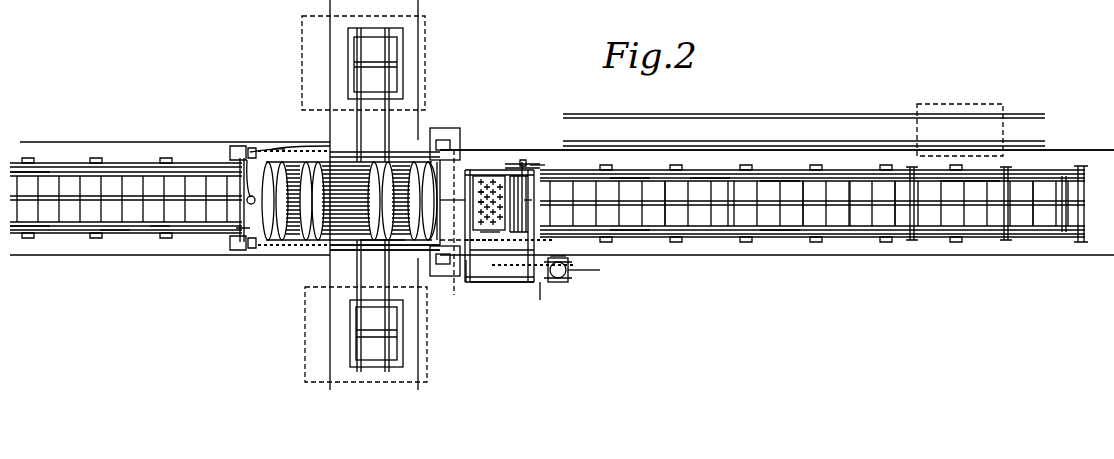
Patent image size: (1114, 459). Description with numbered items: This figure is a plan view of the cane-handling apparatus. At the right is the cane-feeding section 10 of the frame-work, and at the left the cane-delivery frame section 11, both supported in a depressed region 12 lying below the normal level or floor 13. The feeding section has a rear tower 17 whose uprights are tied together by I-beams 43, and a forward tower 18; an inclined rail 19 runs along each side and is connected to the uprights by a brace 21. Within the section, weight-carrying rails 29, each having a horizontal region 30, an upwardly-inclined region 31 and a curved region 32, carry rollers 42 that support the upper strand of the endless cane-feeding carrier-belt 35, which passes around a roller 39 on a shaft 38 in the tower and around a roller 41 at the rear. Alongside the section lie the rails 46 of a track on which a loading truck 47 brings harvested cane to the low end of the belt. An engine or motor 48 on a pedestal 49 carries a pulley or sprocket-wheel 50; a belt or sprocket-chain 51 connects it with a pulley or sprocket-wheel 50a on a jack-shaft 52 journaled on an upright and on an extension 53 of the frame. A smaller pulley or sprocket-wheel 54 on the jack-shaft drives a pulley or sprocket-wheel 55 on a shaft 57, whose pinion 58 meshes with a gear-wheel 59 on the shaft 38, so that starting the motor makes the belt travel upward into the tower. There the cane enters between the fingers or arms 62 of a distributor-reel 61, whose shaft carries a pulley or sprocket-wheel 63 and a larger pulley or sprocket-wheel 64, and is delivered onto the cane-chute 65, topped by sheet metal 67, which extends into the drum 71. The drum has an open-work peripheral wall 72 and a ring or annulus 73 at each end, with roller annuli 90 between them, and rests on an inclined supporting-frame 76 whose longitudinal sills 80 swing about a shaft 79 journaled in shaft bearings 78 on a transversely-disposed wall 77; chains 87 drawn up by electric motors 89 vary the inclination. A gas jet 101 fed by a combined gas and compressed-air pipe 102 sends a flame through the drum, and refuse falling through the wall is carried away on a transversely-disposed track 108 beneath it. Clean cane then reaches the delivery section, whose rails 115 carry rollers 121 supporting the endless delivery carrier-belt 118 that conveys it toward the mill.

The cane-feeding section 10 is at (727, 247).
The cane-delivery frame section 11 is at (144, 161).
The depressed region 12 is at (68, 146).
The normal level or floor 13 is at (626, 134).
The tower 17 is at (1008, 176).
The tower 18 is at (476, 174).
The inclined rail 19 is at (640, 176).
The brace 21 is at (866, 178).
The weight-carrying rail 29 is at (700, 176).
The horizontal region 30 is at (966, 178).
The upwardly-inclined region 31 is at (665, 178).
The curved region 32 is at (810, 178).
The endless cane-feeding carrier-belt 35 is at (770, 178).
The shaft 38 is at (518, 164).
The roller 39 is at (522, 192).
The roller 41 is at (1064, 236).
The roller 42 is at (898, 178).
The I-beam 43 is at (912, 240).
The rail 46 is at (845, 122).
The loading truck 47 is at (960, 112).
The engine or motor 48 is at (568, 276).
The pedestal 49 is at (566, 262).
The pulley or sprocket-wheel 50 is at (576, 272).
The pulley or sprocket-wheel 50a is at (528, 272).
The belt or sprocket-chain 51 is at (543, 276).
The jack-shaft 52 is at (502, 259).
The extension 53 is at (500, 281).
The pulley or sprocket-wheel 54 is at (472, 254).
The pulley or sprocket-wheel 55 is at (545, 241).
The shaft 57 is at (530, 204).
The pinion 58 is at (535, 168).
The gear-wheel 59 is at (524, 160).
The distributor-reel 61 is at (486, 175).
The fingers or arms 62 is at (478, 200).
The pulley or sprocket-wheel 63 is at (488, 232).
The pulley or sprocket-wheel 64 is at (478, 240).
The cane-chute 65 is at (447, 176).
The sheet metal 67 is at (446, 189).
The drum 71 is at (322, 238).
The open-work peripheral wall 72 is at (362, 160).
The ring or annulus 73 is at (244, 232).
The supporting-frame 76 is at (398, 152).
The transversely-disposed wall 77 is at (440, 158).
The shaft bearings 78 is at (440, 140).
The shaft 79 is at (445, 162).
The longitudinal sill 80 is at (366, 150).
The chain 87 is at (300, 149).
The electric motor 89 is at (254, 148).
The roller annulus 90 is at (376, 242).
The gas jet 101 is at (248, 203).
The combined gas and compressed-air pipe 102 is at (282, 146).
The transversely-disposed track 108 is at (360, 272).
The rail 115 is at (42, 158).
The endless delivery carrier-belt 118 is at (158, 232).
The roller 121 is at (112, 235).